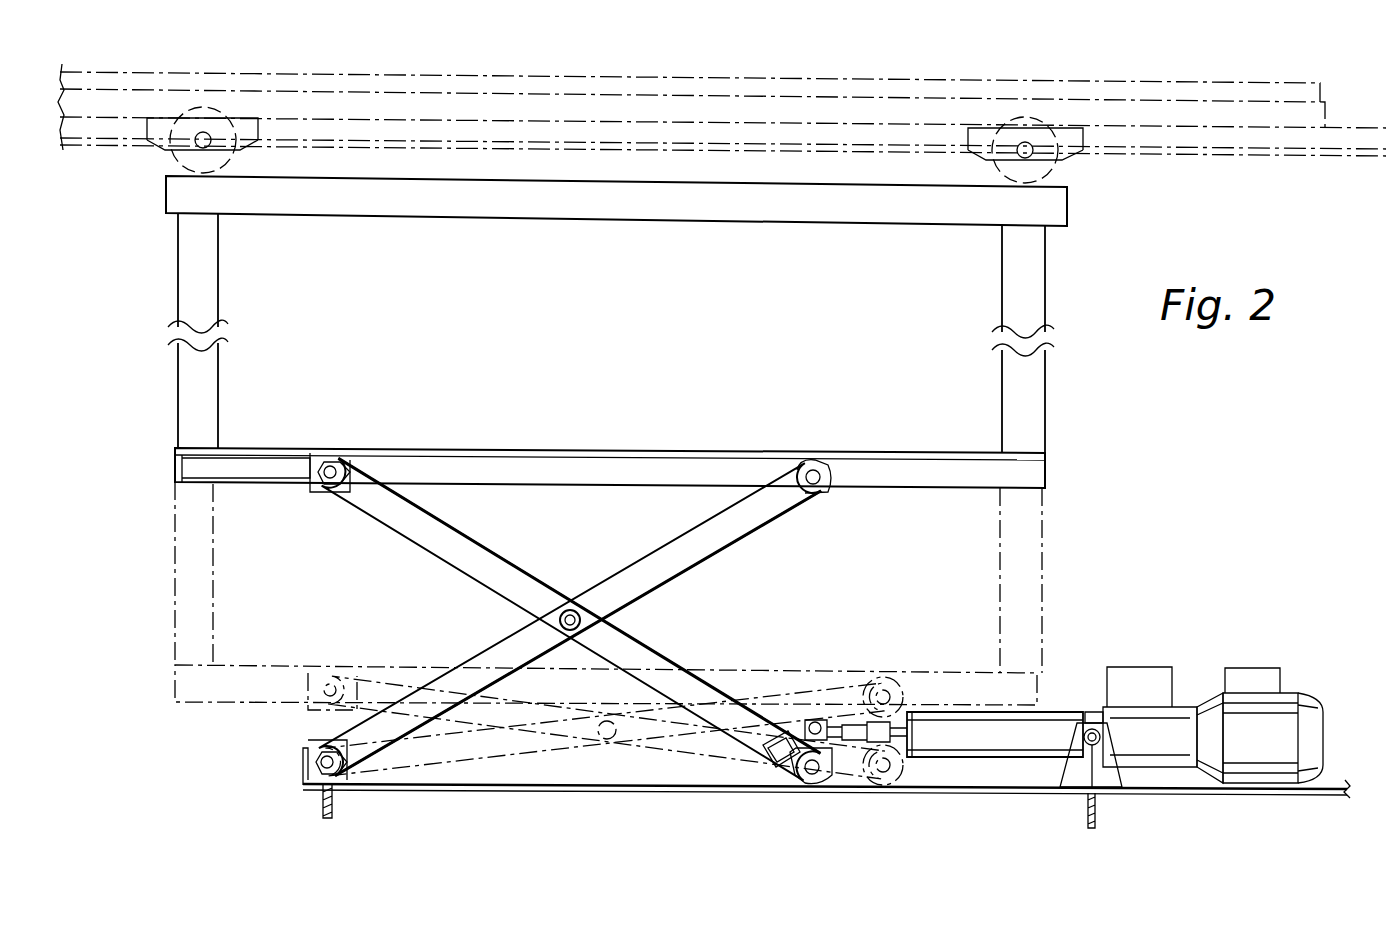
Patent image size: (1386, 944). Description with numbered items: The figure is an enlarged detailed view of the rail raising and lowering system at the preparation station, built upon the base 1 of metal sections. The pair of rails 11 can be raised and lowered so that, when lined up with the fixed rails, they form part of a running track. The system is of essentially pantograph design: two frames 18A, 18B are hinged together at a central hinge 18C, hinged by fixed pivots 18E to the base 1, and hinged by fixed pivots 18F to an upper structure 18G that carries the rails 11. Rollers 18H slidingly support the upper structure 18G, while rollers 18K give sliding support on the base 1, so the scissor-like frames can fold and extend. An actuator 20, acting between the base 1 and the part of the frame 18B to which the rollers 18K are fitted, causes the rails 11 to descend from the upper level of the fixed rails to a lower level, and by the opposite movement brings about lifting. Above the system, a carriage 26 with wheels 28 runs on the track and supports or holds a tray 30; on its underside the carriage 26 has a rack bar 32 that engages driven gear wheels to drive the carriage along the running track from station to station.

The base 1 is at (308, 810).
The rails 11 is at (473, 205).
The frame 18A is at (653, 560).
The frame 18B is at (647, 653).
The hinge 18C is at (570, 610).
The fixed pivots 18E is at (357, 787).
The fixed pivots 18F is at (330, 477).
The upper structure 18G is at (643, 463).
The rollers 18H is at (827, 490).
The rollers 18K is at (832, 787).
The actuator 20 is at (1127, 720).
The carriage 26 is at (1160, 127).
The wheels 28 is at (1046, 168).
The tray 30 is at (1245, 93).
The rack bar 32 is at (1312, 143).